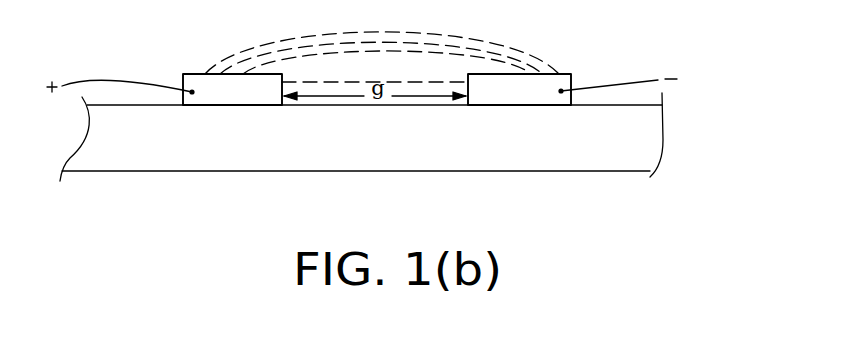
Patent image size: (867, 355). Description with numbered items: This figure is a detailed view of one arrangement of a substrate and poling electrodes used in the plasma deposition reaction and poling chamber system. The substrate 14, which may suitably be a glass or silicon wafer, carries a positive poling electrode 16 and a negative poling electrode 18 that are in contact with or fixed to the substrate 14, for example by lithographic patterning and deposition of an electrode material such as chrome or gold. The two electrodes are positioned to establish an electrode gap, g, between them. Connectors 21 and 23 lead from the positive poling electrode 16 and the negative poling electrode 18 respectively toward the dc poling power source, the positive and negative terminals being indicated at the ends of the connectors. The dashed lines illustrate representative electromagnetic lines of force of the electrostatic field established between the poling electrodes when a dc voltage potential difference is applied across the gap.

The substrate 14 is at (540, 140).
The positive poling electrode 16 is at (192, 92).
The negative poling electrode 18 is at (562, 76).
The connector 21 is at (103, 78).
The connector 23 is at (637, 80).